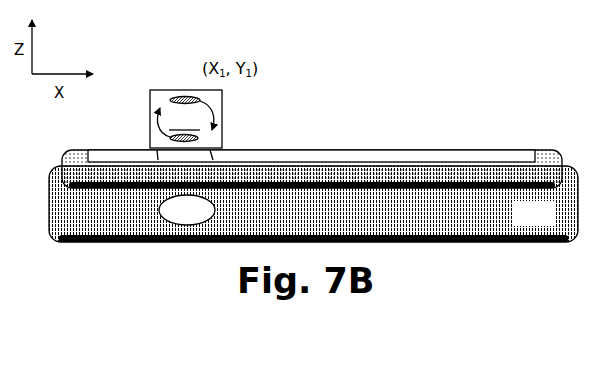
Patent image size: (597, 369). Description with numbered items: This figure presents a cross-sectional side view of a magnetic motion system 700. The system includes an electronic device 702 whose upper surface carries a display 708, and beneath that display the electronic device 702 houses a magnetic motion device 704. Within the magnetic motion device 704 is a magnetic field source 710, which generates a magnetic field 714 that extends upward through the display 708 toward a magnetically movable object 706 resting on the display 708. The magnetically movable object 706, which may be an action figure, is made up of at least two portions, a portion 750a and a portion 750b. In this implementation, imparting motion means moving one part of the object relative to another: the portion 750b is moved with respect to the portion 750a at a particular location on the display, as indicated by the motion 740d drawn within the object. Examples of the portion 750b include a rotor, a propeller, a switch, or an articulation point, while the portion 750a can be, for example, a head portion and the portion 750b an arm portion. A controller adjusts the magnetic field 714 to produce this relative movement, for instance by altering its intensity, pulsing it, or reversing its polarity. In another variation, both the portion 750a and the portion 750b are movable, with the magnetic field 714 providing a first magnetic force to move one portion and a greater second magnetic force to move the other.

The magnetic motion system 700 is at (499, 52).
The electronic device 702 is at (493, 165).
The magnetic motion device 704 is at (552, 224).
The magnetically movable object 706 is at (195, 104).
The display 708 is at (440, 158).
The magnetic field source 710 is at (204, 220).
The magnetic field 714 is at (155, 175).
The motion 740d is at (150, 117).
The portion 750a is at (222, 118).
The portion 750b is at (191, 98).